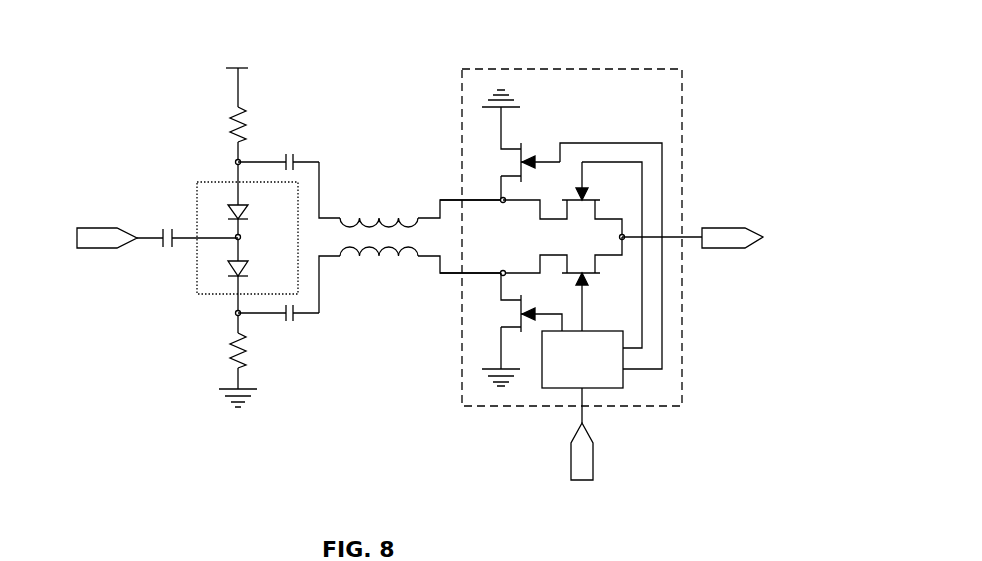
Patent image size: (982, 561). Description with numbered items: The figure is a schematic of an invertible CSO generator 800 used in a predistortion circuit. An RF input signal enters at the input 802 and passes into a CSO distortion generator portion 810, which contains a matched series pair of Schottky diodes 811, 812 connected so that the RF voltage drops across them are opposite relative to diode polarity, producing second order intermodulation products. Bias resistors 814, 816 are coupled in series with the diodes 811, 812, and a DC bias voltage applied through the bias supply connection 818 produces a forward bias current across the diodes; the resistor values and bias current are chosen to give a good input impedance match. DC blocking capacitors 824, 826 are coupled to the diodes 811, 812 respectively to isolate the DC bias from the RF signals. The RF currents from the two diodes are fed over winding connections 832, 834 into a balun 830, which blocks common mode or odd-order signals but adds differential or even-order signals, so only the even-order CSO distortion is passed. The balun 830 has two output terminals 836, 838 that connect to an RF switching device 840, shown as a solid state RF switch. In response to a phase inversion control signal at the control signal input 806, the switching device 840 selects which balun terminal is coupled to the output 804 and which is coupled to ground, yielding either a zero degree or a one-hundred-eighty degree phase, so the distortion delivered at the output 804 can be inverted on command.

The invertible CSO generator 800 is at (160, 52).
The CSO distortion generator portion 810 is at (127, 141).
The bias input 818 is at (248, 68).
The bias resistor 814 is at (245, 108).
The DC blocking capacitor 824 is at (293, 154).
The diode 811 is at (227, 205).
The diode 812 is at (228, 261).
The input 802 is at (97, 248).
The DC blocking capacitor 826 is at (298, 323).
The bias resistor 816 is at (243, 367).
The balun 830 is at (402, 303).
The primary winding connection 832 is at (319, 180).
The primary winding connection 834 is at (319, 275).
The output terminal 836 is at (446, 199).
The output terminal 838 is at (443, 275).
The RF switching device 840 is at (635, 406).
The output 804 is at (745, 248).
The control signal input 806 is at (571, 462).